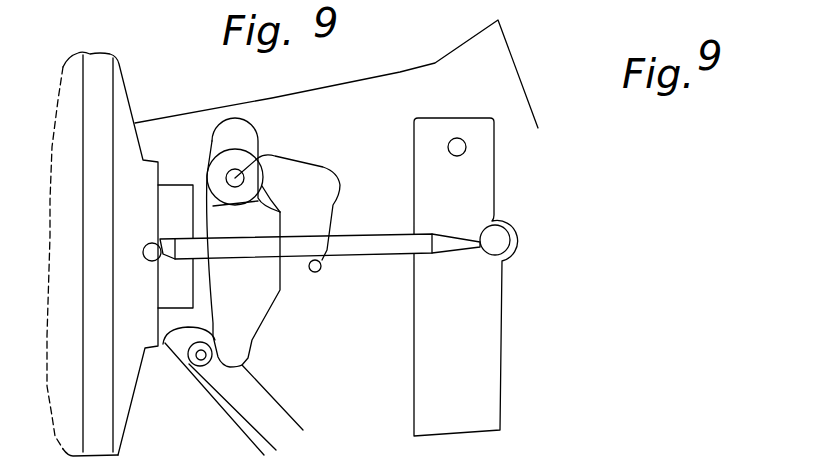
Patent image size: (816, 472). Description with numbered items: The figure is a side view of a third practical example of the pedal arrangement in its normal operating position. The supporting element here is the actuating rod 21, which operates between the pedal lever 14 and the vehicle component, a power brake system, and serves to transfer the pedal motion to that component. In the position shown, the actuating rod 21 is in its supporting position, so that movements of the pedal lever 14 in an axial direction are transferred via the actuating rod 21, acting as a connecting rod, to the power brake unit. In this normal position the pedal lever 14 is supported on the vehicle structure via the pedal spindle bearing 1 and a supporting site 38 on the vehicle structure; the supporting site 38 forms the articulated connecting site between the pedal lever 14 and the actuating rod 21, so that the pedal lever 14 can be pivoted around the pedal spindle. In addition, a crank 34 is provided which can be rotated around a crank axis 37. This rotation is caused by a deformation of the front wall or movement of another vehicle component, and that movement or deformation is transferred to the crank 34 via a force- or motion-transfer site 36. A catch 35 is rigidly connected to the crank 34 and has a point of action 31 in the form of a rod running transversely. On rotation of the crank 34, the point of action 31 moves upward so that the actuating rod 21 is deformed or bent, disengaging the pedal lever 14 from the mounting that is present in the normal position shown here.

The pedal spindle bearing 1 is at (457, 138).
The pedal lever 14 is at (493, 400).
The actuating rod 21 is at (380, 243).
The point of action 31 is at (320, 271).
The crank 34 is at (247, 320).
The catch 35 is at (322, 178).
The force- or motion-transfer site 36 is at (195, 365).
The crank axis 37 is at (262, 160).
The supporting site 38 is at (497, 238).